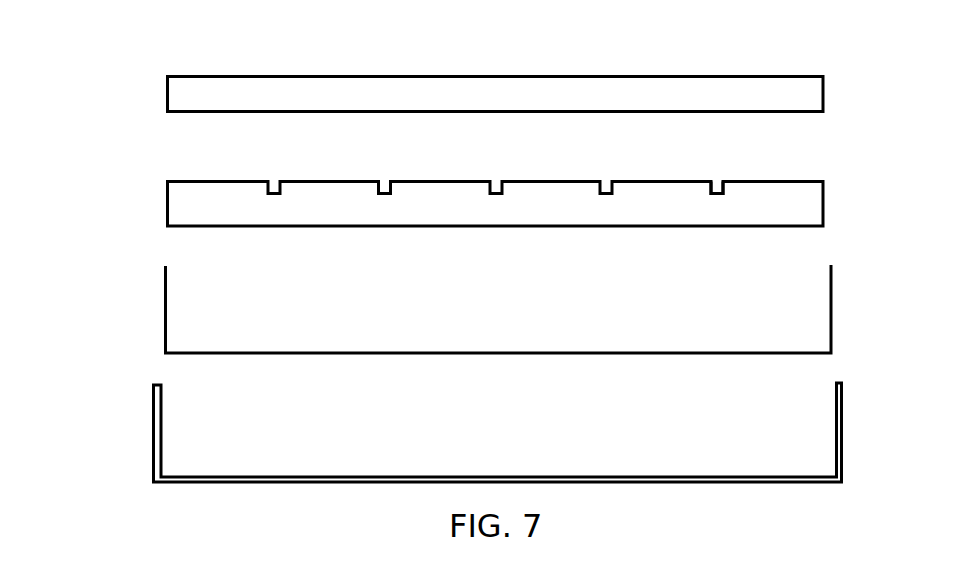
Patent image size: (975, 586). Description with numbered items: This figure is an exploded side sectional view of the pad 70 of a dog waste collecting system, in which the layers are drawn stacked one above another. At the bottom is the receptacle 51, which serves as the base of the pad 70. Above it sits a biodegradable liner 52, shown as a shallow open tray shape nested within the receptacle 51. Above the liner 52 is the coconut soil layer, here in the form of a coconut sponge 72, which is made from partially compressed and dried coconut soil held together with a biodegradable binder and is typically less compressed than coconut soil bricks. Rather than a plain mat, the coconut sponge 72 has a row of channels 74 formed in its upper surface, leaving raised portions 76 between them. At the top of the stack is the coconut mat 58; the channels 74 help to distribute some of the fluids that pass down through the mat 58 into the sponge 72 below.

The pad 70 is at (76, 44).
The coconut mat 58 is at (825, 95).
The coconut sponge 72 is at (825, 205).
The channels 74 is at (717, 185).
The raised portions 76 is at (802, 178).
The biodegradable liner 52 is at (832, 300).
The receptacle 51 is at (843, 427).